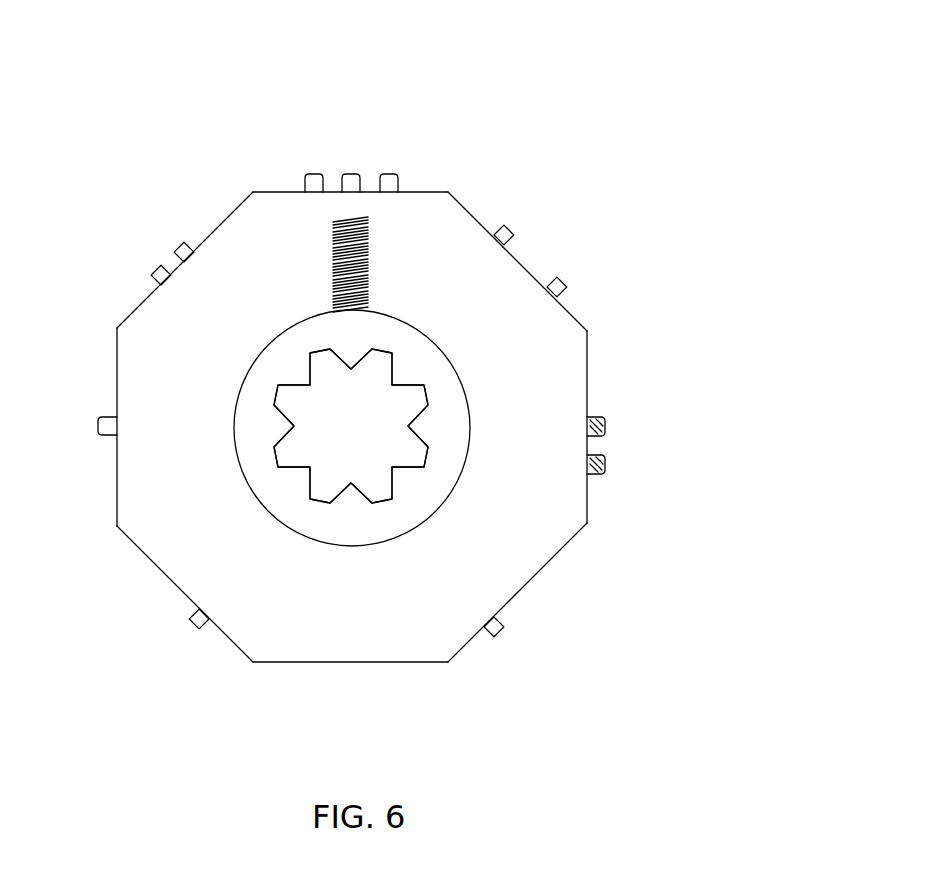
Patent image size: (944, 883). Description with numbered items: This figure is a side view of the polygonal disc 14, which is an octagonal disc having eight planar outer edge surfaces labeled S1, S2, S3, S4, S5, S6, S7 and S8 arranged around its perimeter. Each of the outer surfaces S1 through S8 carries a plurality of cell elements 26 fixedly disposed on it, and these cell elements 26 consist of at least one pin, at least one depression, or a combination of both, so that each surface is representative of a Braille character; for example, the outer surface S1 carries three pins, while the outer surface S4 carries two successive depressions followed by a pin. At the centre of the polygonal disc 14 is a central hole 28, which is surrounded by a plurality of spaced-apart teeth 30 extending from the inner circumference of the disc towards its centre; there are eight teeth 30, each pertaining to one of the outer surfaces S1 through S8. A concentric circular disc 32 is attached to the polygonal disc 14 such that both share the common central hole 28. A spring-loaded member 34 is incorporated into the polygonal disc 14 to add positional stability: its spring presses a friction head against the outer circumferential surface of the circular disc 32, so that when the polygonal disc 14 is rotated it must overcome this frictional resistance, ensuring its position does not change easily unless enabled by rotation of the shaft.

The polygonal disc 14 is at (567, 93).
The cell elements 26 is at (350, 172).
The central hole 28 is at (347, 435).
The teeth 30 is at (378, 377).
The circular disc 32 is at (456, 417).
The spring-loaded member 34 is at (368, 242).
The outer surface S1 is at (424, 190).
The outer surface S2 is at (573, 312).
The outer surface S3 is at (590, 390).
The outer surface S4 is at (565, 548).
The outer surface S5 is at (407, 663).
The outer surface S6 is at (138, 545).
The outer surface S7 is at (115, 388).
The outer surface S8 is at (135, 308).